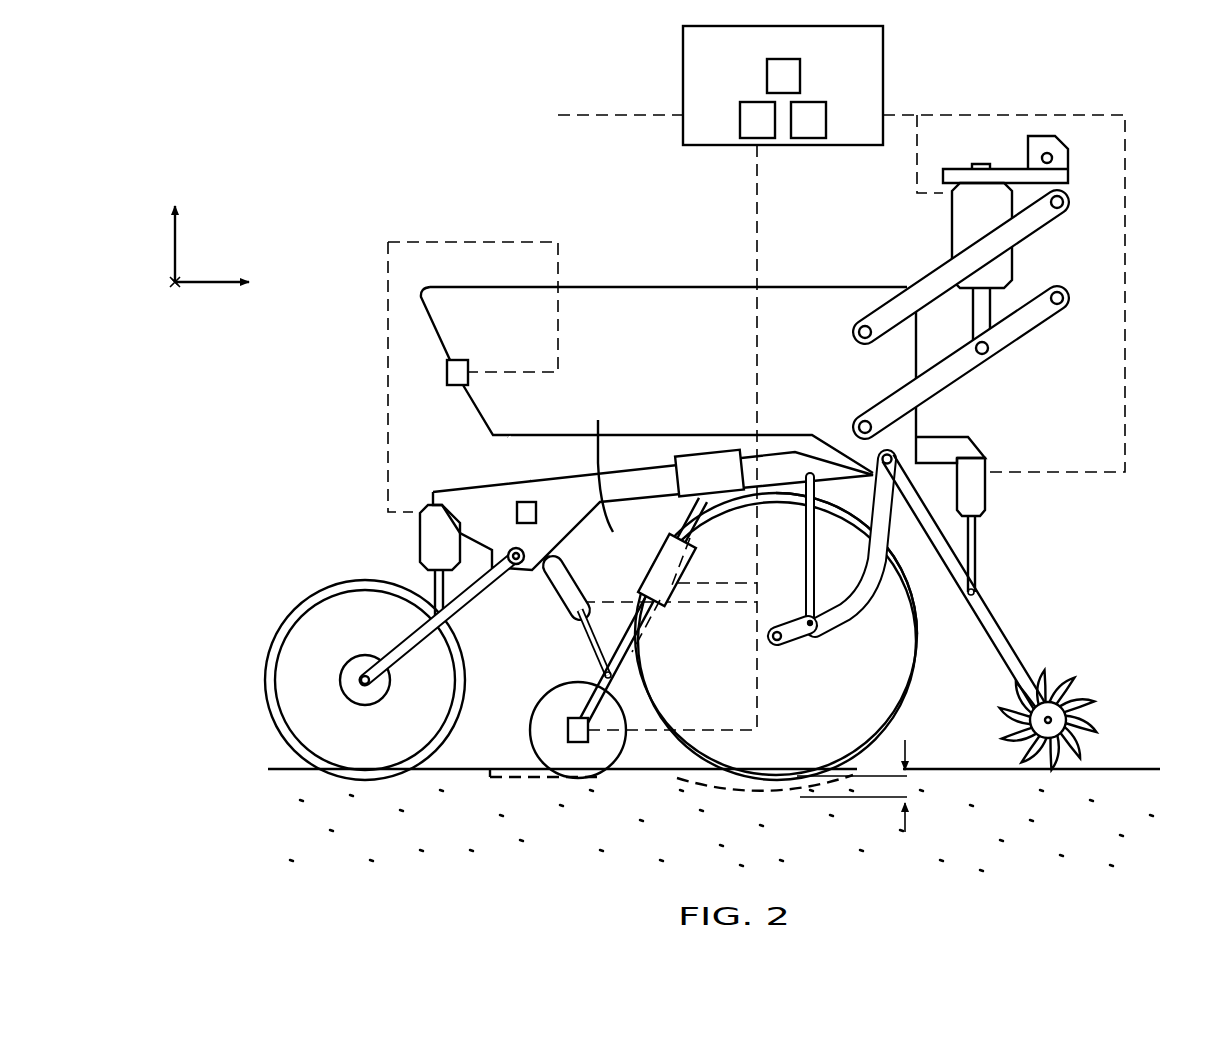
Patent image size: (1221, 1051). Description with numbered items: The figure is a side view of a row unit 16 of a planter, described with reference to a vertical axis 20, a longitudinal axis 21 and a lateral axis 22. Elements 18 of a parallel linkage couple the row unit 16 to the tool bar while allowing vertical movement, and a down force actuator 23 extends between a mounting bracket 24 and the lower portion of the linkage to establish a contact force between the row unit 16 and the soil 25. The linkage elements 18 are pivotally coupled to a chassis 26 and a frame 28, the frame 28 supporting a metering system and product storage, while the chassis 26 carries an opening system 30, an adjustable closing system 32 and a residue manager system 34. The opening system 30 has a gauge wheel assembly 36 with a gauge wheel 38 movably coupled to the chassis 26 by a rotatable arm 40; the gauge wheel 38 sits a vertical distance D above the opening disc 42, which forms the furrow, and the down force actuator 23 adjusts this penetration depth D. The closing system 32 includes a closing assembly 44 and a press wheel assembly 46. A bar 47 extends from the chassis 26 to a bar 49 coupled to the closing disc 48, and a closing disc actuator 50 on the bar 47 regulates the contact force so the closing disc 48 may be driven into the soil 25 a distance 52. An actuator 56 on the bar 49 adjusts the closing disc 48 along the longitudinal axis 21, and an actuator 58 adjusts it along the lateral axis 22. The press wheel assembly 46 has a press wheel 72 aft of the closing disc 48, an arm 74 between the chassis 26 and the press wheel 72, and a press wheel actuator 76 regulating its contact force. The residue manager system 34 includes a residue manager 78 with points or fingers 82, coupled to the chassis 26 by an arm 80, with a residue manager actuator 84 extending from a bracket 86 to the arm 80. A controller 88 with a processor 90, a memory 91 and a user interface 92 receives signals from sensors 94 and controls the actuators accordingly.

The row unit 16 is at (538, 176).
The parallel linkage elements 18 is at (1063, 216).
The vertical axis 20 is at (175, 246).
The longitudinal axis 21 is at (208, 282).
The lateral axis 22 is at (168, 282).
The down force actuator 23 is at (953, 226).
The mounting bracket 24 is at (1028, 153).
The soil 25 is at (1162, 769).
The chassis 26 is at (468, 488).
The frame 28 is at (672, 287).
The opening system 30 is at (938, 705).
The adjustable closing system 32 is at (330, 473).
The residue manager system 34 is at (1022, 580).
The gauge wheel assembly 36 is at (786, 750).
The gauge wheel 38 is at (920, 603).
The rotatable arm 40 is at (817, 628).
The opening disc 42 is at (720, 785).
The closing assembly 44 is at (540, 675).
The press wheel assembly 46 is at (293, 545).
The bar 47 is at (578, 628).
The closing disc 48 is at (531, 737).
The bar 49 is at (690, 500).
The closing disc actuator 50 is at (563, 568).
The distance 52 is at (490, 772).
The actuator 56 is at (705, 453).
The actuator 58 is at (600, 463).
The press wheel 72 is at (264, 680).
The arm 74 is at (481, 598).
The press wheel actuator 76 is at (421, 535).
The residue manager 78 is at (1082, 740).
The arm 80 is at (1001, 638).
The points or fingers 82 is at (1093, 690).
The residue manager actuator 84 is at (988, 487).
The bracket 86 is at (960, 437).
The controller 88 is at (783, 145).
The processor 90 is at (740, 122).
The memory 91 is at (826, 122).
The user interface 92 is at (800, 76).
The sensors 94 is at (322, 160).
The vertical distance D is at (905, 815).